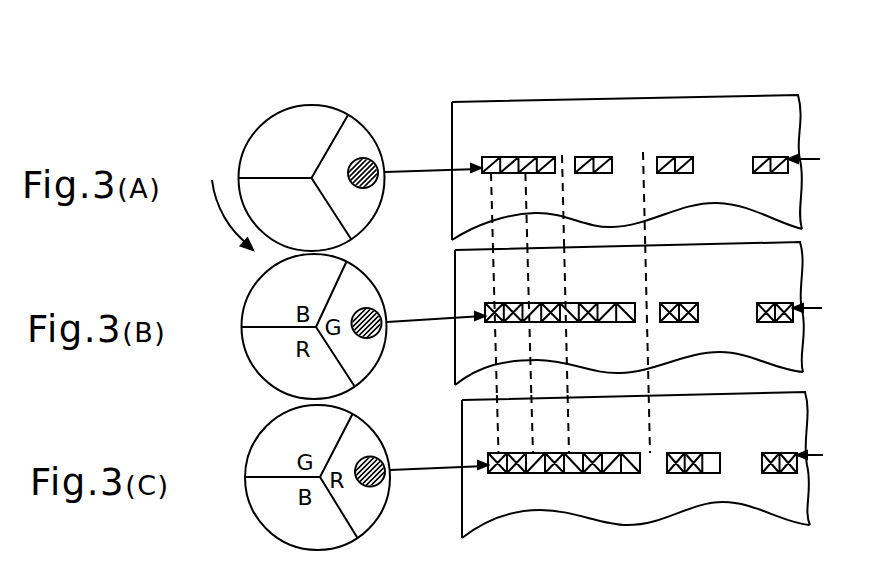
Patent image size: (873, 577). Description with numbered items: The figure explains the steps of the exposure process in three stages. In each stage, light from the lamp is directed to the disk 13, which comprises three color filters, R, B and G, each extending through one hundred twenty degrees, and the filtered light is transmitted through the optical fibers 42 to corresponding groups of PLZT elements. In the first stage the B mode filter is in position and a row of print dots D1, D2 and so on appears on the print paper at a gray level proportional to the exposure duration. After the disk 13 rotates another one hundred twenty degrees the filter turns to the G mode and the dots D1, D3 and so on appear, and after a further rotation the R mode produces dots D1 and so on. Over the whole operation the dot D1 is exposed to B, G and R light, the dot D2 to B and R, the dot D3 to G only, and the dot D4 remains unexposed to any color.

The disk 13 is at (267, 120).
The optical fibers 42 is at (362, 158).
The dot D1 is at (484, 155).
The dot D2 is at (526, 155).
The dot D3 is at (566, 155).
The dot D4 is at (645, 155).